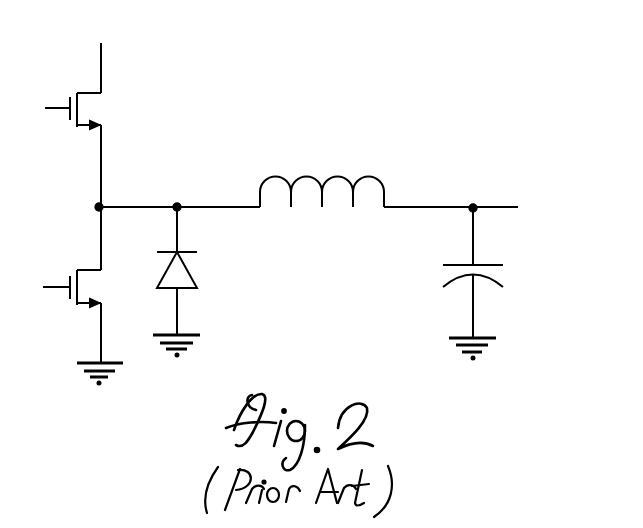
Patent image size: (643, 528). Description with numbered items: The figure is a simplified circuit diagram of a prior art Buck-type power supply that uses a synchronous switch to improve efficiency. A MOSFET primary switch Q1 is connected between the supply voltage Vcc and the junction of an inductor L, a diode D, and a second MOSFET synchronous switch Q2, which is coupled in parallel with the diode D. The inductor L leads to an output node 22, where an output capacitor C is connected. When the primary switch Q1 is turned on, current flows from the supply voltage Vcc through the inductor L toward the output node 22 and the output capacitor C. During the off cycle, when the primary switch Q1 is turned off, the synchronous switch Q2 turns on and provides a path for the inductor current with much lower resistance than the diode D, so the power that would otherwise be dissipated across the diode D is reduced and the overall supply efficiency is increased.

The output node 22 is at (473, 205).
The supply voltage Vcc is at (124, 61).
The primary switch Q1 is at (88, 150).
The synchronous switch Q2 is at (87, 296).
The diode D is at (190, 282).
The inductor L is at (322, 213).
The output capacitor C is at (488, 284).